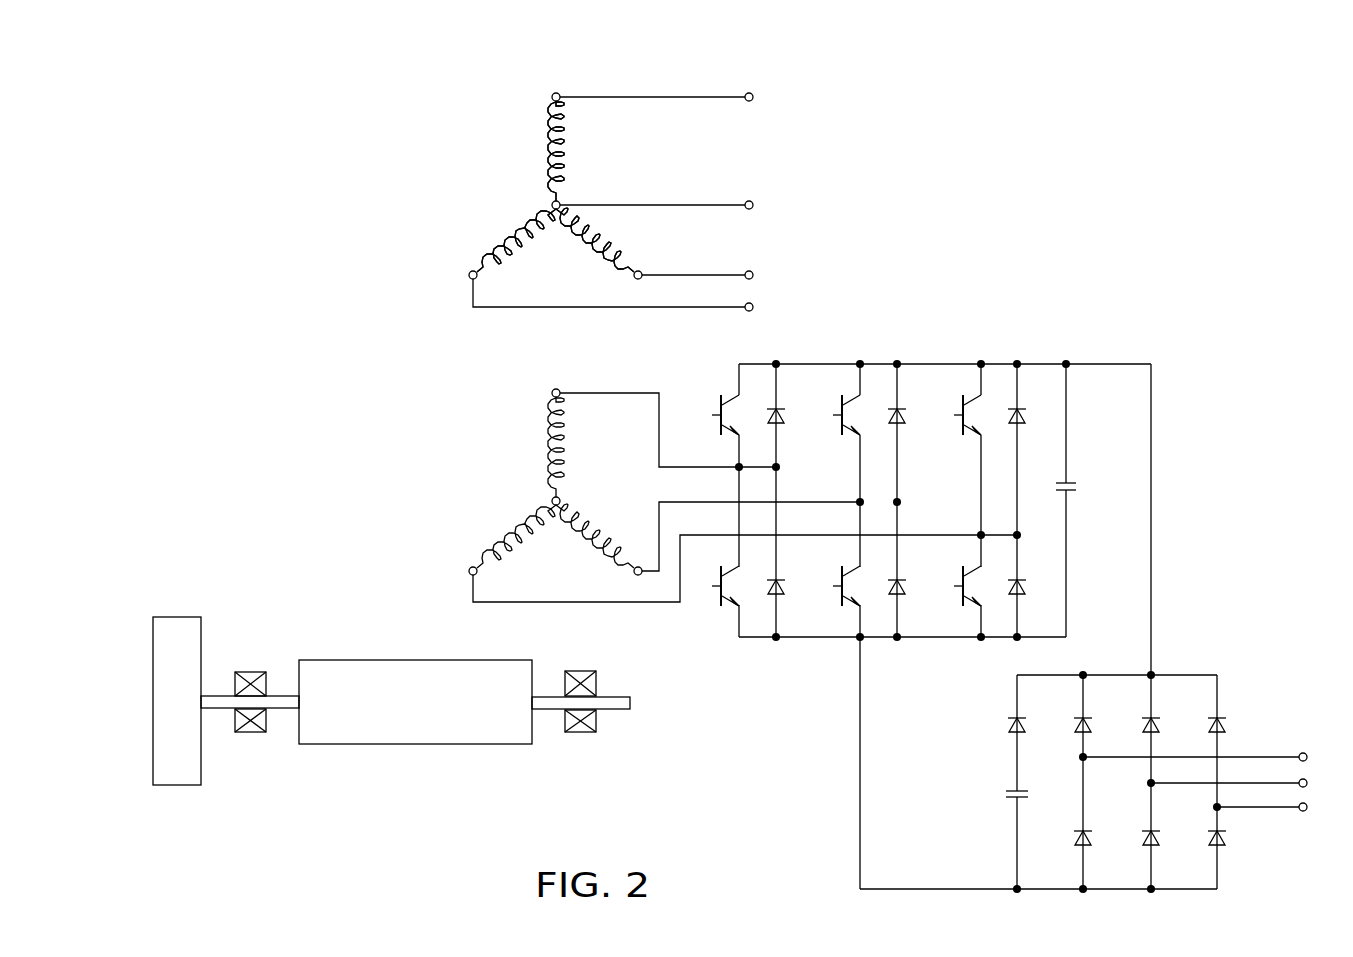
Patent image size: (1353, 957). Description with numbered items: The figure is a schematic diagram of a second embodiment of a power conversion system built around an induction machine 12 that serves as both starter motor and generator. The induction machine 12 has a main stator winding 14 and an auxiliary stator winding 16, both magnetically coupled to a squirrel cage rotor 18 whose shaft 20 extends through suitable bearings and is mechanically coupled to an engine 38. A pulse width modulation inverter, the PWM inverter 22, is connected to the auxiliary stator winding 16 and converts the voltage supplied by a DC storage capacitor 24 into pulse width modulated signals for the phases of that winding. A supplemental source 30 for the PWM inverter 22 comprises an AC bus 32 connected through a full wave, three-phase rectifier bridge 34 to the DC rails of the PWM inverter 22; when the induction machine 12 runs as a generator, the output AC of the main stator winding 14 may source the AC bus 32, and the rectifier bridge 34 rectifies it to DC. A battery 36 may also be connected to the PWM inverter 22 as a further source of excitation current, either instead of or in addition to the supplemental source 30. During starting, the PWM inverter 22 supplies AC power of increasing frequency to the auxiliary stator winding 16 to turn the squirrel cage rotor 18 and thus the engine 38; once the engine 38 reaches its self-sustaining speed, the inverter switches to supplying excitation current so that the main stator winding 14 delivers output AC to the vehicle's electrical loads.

The induction machine 12 is at (646, 80).
The main stator winding 14 is at (528, 190).
The auxiliary stator winding 16 is at (528, 486).
The squirrel cage rotor 18 is at (427, 744).
The shaft 20 is at (617, 710).
The PWM inverter 22 is at (902, 340).
The DC storage capacitor 24 is at (1073, 494).
The supplemental source 30 is at (1105, 651).
The AC bus 32 is at (1324, 734).
The full wave, three-phase rectifier bridge 34 is at (1115, 886).
The battery 36 is at (985, 828).
The engine 38 is at (205, 765).